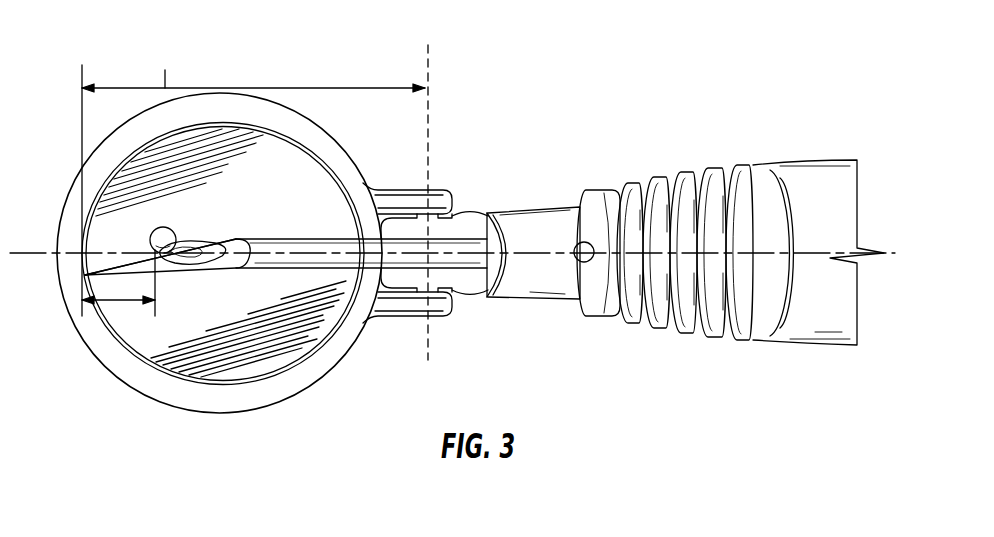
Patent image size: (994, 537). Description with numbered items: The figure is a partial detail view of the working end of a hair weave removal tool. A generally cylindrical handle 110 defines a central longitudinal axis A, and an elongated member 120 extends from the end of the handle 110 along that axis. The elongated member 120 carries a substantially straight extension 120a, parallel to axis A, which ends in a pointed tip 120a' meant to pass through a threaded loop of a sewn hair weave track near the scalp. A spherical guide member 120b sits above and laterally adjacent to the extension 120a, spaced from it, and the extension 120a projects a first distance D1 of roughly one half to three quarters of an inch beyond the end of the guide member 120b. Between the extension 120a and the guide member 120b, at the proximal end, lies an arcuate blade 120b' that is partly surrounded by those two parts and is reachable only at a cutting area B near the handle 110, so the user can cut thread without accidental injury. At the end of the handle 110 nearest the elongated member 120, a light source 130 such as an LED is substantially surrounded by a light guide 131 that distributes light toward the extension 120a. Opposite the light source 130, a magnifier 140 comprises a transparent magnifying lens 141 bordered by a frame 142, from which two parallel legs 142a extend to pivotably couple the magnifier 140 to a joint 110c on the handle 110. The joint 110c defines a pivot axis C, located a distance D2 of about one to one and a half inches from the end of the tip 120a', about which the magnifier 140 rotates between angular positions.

The handle 110 is at (803, 188).
The joint 110c is at (403, 228).
The elongated member 120 is at (388, 308).
The extension 120a is at (160, 347).
The pointed tip 120a' is at (54, 328).
The guide member 120b is at (191, 220).
The blade 120b' is at (226, 232).
The light source 130 is at (582, 245).
The light guide 131 is at (552, 301).
The magnifier 140 is at (316, 121).
The magnifying lens 141 is at (273, 320).
The frame 142 is at (250, 100).
The legs 142a is at (489, 297).
The central longitudinal axis A is at (24, 246).
The cutting area B is at (146, 250).
The pivot axis C is at (430, 176).
The first distance D1 is at (118, 291).
The distance D2 is at (253, 180).